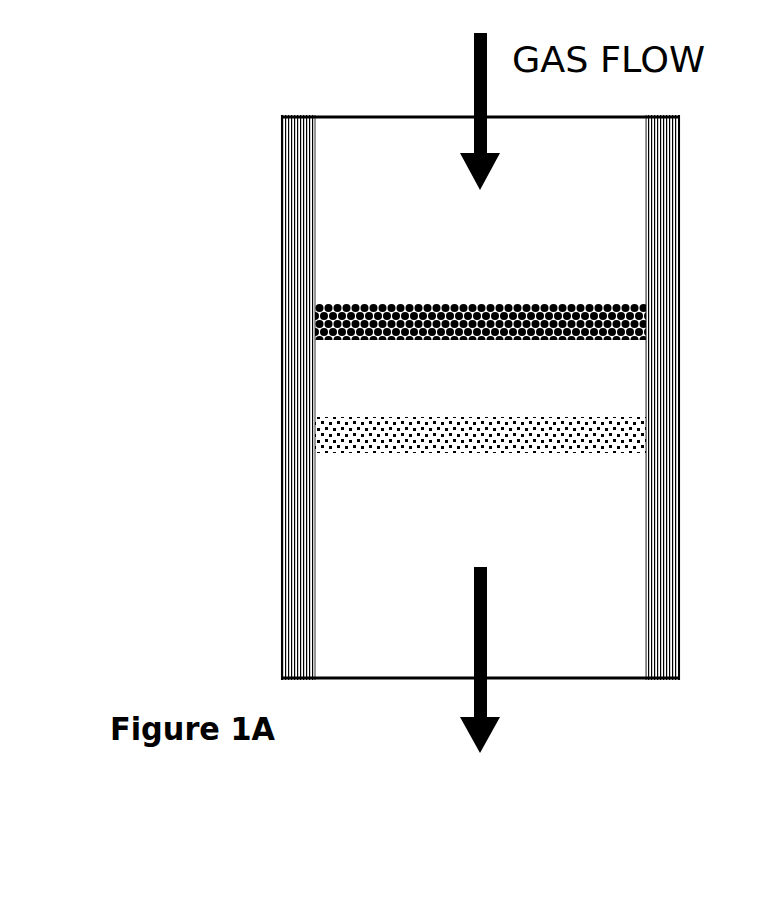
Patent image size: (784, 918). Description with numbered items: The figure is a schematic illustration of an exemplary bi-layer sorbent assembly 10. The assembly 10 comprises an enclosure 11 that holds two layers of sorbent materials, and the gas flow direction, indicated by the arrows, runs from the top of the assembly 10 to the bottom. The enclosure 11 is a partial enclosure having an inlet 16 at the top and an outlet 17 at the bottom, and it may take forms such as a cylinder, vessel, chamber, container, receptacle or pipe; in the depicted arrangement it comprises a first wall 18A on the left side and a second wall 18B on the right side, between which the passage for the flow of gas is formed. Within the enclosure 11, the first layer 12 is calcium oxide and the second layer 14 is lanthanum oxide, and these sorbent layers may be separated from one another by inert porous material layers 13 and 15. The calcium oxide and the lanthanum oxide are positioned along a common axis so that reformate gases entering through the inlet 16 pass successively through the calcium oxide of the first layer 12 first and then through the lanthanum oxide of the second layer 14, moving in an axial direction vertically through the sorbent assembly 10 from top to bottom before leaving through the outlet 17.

The bi-layer sorbent assembly 10 is at (328, 96).
The enclosure 11 is at (279, 229).
The first layer 12 is at (645, 316).
The inert porous material layer 13 is at (630, 365).
The second layer 14 is at (631, 429).
The inert porous material layer 15 is at (632, 466).
The inlet 16 is at (443, 127).
The outlet 17 is at (407, 681).
The first wall 18A is at (296, 316).
The second wall 18B is at (668, 229).